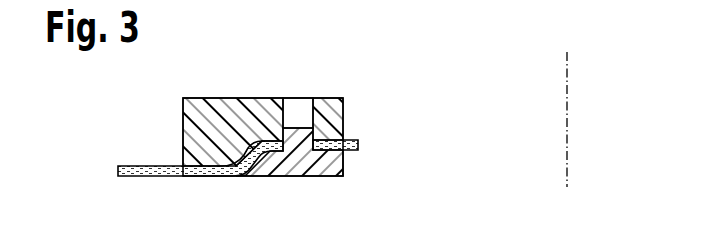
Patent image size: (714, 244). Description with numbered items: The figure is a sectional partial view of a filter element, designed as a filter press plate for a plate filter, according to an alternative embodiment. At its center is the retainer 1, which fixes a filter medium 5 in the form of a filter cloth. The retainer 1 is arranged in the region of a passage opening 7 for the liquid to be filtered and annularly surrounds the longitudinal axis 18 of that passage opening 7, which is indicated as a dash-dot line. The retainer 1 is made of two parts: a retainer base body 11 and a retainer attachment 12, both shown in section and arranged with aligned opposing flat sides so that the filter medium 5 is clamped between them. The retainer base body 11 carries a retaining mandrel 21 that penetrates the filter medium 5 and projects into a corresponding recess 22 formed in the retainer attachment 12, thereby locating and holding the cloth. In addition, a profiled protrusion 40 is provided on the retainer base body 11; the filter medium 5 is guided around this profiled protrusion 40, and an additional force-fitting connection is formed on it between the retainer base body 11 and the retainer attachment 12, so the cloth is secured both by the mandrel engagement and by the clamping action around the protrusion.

The retainer 1 is at (474, 78).
The filter medium 5 is at (143, 165).
The passage opening 7 is at (481, 134).
The retainer base body 11 is at (333, 168).
The retainer attachment 12 is at (210, 104).
The longitudinal axis 18 is at (568, 119).
The retaining mandrel 21 is at (331, 138).
The recess 22 is at (311, 104).
The profiled protrusion 40 is at (192, 162).